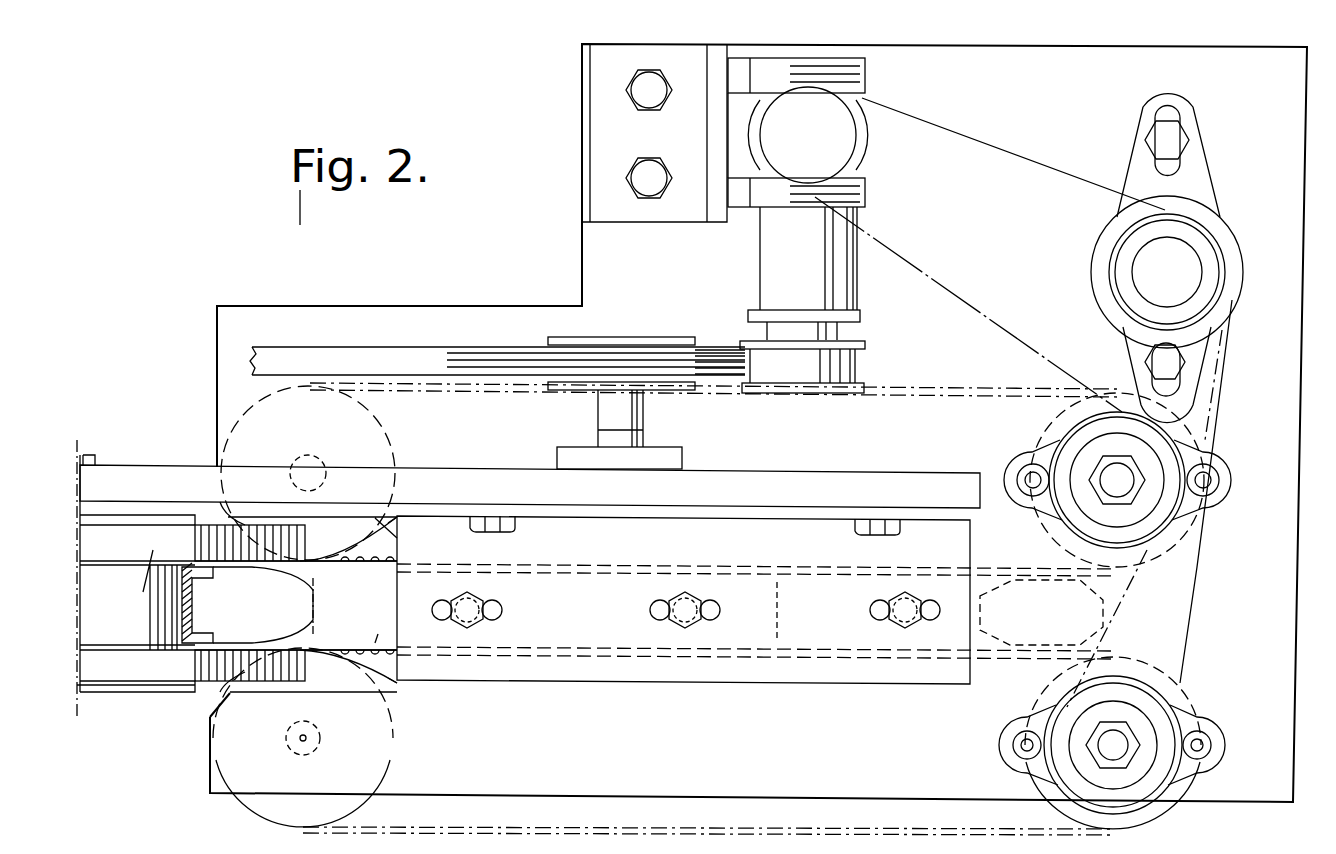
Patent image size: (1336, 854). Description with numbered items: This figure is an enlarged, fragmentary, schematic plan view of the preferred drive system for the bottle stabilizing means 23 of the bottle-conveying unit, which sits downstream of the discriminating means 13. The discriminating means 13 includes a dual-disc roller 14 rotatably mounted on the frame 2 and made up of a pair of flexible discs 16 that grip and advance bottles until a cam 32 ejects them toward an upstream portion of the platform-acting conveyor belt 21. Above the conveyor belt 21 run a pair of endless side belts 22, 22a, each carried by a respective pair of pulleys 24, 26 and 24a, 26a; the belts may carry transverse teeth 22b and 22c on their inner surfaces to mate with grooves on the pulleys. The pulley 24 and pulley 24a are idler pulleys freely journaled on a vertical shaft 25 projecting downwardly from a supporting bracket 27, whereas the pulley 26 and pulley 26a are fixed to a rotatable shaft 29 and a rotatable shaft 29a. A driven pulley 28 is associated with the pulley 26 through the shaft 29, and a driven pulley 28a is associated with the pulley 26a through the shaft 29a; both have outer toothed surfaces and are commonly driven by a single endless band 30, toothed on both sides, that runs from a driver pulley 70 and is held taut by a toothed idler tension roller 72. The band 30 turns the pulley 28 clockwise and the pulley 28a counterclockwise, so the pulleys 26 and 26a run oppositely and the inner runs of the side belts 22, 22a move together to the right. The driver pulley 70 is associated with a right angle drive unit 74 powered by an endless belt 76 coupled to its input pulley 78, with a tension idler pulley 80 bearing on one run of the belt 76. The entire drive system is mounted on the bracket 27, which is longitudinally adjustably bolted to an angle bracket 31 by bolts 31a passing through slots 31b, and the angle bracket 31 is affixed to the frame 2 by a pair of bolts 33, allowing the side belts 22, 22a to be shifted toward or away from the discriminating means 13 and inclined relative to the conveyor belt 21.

The frame 2 is at (508, 485).
The discriminating means 13 is at (172, 700).
The dual-disc roller 14 is at (170, 645).
The flexible discs 16 is at (238, 573).
The conveyor belt 21 is at (352, 610).
The endless side belt 22 is at (715, 830).
The endless side belt 22a is at (578, 607).
The transverse teeth 22b is at (400, 680).
The transverse teeth 22c is at (393, 555).
The bottle stabilizing means 23 is at (197, 783).
The idler pulley 24 is at (275, 808).
The idler pulley 24a is at (245, 417).
The shaft 25 is at (322, 744).
The pulley 26 is at (1145, 818).
The pulley 26a is at (1175, 552).
The supporting bracket 27 is at (952, 441).
The driven pulley 28 is at (1148, 678).
The driven pulley 28a is at (1145, 418).
The rotatable shaft 29 is at (1122, 742).
The rotatable shaft 29a is at (1117, 470).
The endless band 30 is at (1190, 603).
The angle bracket 31 is at (615, 672).
The bolts 31a is at (480, 598).
The slots 31b is at (488, 614).
The cam 32 is at (197, 603).
The bolts 33 is at (515, 529).
The driver pulley 70 is at (860, 153).
The tension roller 72 is at (1222, 234).
The right angle drive unit 74 is at (762, 267).
The endless belt 76 is at (727, 392).
The input pulley 78 is at (850, 394).
The tension idler pulley 80 is at (672, 393).